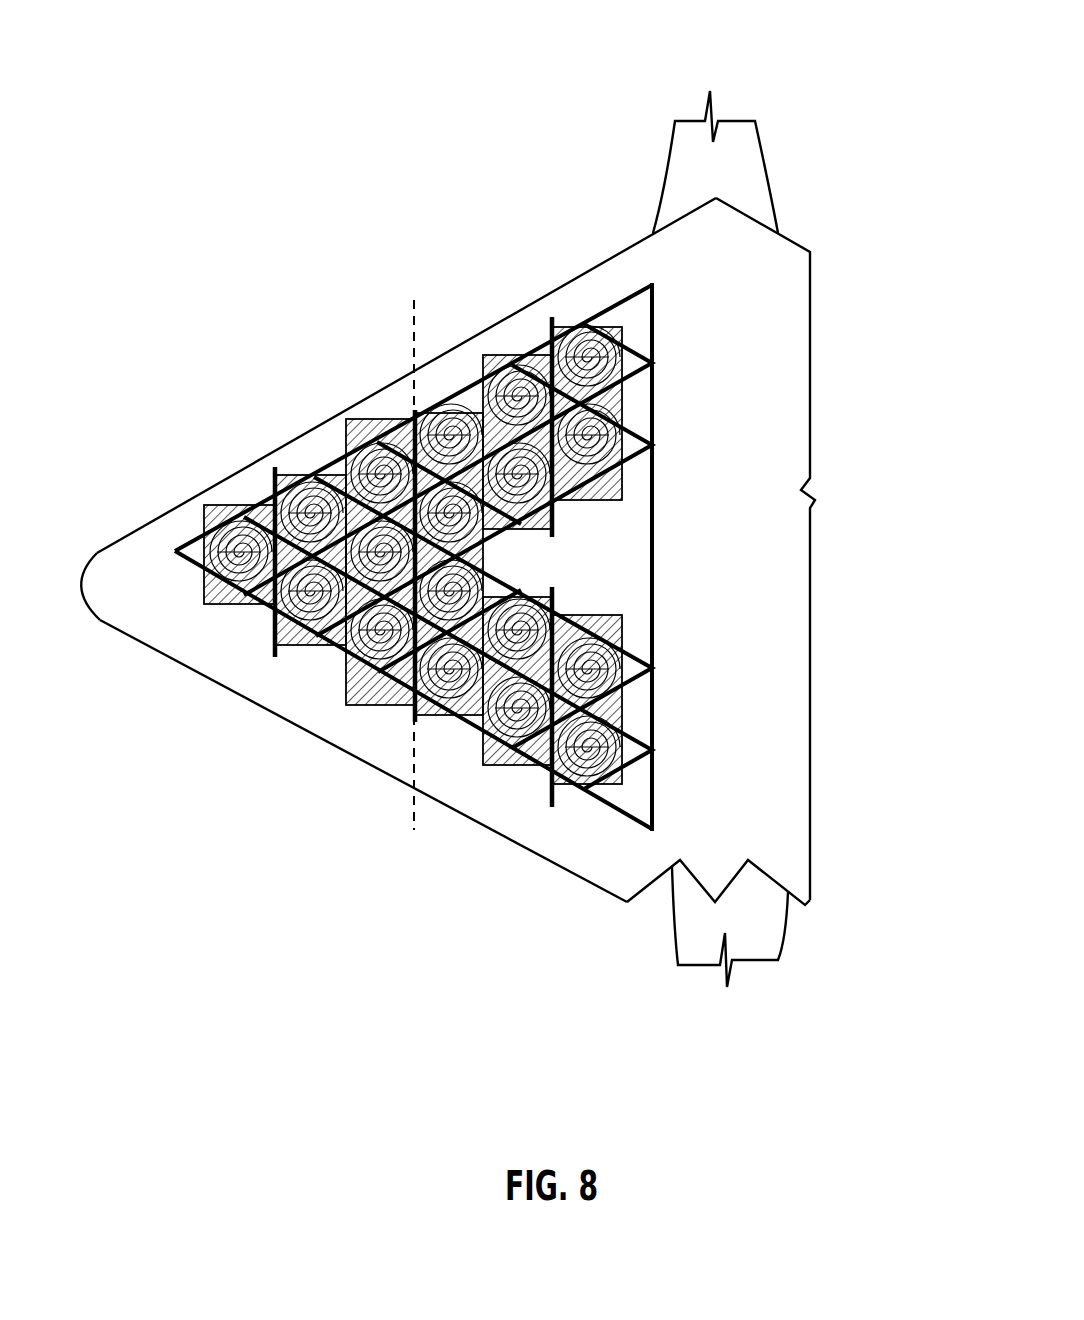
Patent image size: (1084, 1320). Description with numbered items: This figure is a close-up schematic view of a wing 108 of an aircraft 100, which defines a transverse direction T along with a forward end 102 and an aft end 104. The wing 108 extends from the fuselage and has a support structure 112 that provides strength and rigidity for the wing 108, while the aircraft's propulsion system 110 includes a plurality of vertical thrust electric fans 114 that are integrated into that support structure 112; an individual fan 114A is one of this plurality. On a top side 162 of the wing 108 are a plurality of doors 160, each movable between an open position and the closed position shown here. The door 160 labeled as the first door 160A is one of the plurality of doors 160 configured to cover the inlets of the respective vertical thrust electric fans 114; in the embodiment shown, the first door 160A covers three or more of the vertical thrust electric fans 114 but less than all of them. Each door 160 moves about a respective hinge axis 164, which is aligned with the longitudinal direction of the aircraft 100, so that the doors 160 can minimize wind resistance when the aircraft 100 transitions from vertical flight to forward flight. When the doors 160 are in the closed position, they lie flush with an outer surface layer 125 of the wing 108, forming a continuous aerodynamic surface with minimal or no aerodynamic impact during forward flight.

The aircraft 100 is at (500, 545).
The forward end 102 is at (681, 76).
The aft end 104 is at (626, 1012).
The wing 108 is at (305, 446).
The propulsion system 110 is at (379, 757).
The support structure 112 is at (482, 798).
The vertical thrust electric fans 114 is at (282, 655).
The vertical thrust electric fan 114A is at (473, 412).
The outer surface layer 125 is at (532, 815).
The door 160 is at (413, 570).
The first door 160A is at (457, 418).
The top side 162 is at (438, 383).
The hinge axis 164 is at (412, 352).
The transverse direction T is at (800, 1083).